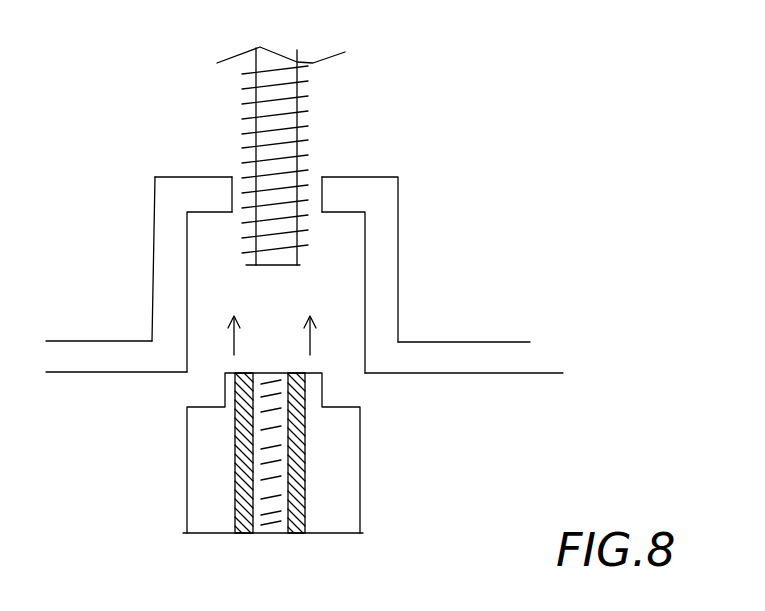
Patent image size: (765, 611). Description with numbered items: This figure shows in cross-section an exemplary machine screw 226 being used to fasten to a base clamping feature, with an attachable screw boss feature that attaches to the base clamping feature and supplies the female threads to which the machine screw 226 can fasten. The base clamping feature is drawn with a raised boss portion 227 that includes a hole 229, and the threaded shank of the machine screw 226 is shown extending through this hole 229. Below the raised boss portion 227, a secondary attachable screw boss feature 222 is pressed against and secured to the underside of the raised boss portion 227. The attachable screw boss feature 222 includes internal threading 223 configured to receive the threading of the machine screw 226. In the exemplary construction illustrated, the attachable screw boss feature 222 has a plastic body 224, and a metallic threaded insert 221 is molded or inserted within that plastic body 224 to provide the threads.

The metallic threaded insert 221 is at (250, 535).
The attachable screw boss feature 222 is at (338, 478).
The internal threading 223 is at (283, 535).
The plastic body 224 is at (462, 353).
The machine screw 226 is at (280, 93).
The raised boss portion 227 is at (383, 242).
The hole 229 is at (322, 196).